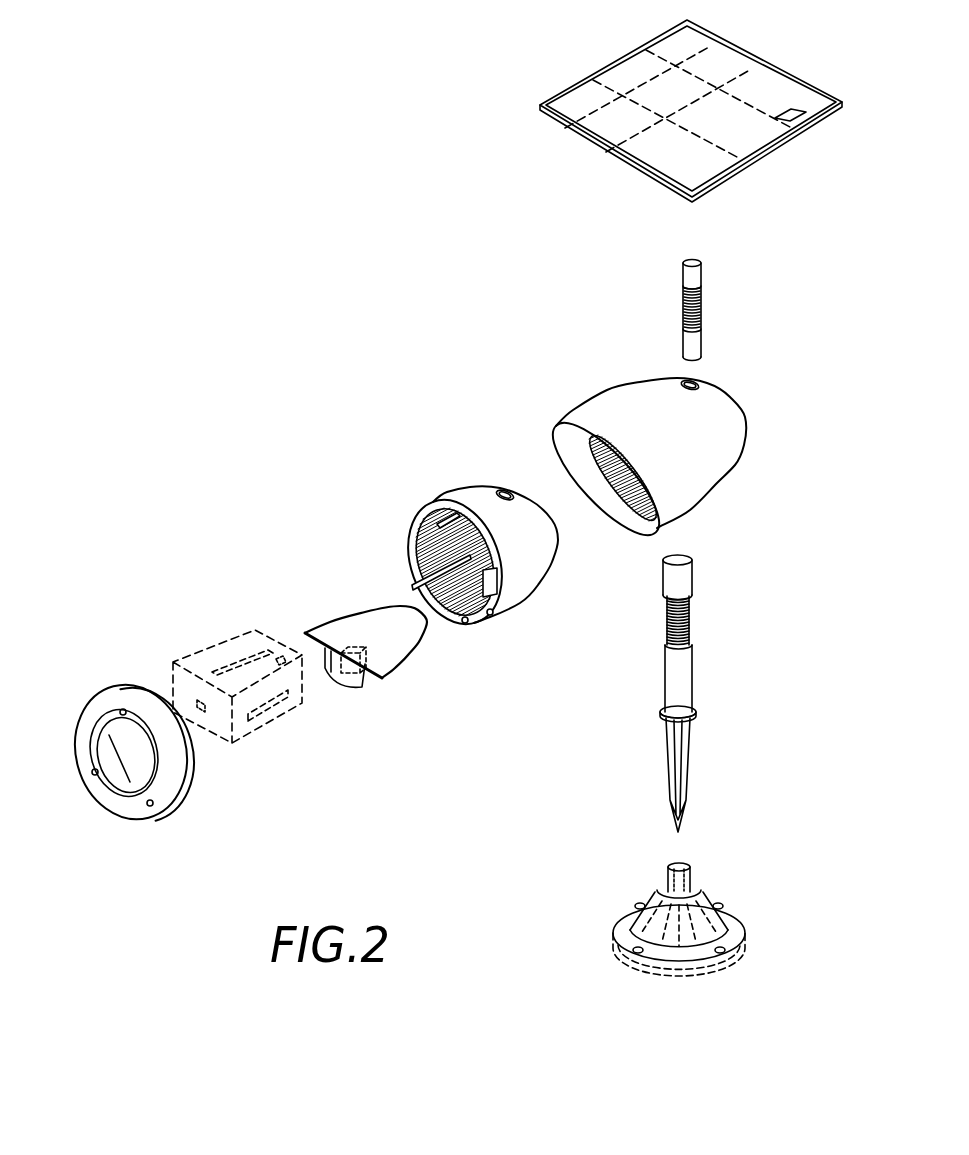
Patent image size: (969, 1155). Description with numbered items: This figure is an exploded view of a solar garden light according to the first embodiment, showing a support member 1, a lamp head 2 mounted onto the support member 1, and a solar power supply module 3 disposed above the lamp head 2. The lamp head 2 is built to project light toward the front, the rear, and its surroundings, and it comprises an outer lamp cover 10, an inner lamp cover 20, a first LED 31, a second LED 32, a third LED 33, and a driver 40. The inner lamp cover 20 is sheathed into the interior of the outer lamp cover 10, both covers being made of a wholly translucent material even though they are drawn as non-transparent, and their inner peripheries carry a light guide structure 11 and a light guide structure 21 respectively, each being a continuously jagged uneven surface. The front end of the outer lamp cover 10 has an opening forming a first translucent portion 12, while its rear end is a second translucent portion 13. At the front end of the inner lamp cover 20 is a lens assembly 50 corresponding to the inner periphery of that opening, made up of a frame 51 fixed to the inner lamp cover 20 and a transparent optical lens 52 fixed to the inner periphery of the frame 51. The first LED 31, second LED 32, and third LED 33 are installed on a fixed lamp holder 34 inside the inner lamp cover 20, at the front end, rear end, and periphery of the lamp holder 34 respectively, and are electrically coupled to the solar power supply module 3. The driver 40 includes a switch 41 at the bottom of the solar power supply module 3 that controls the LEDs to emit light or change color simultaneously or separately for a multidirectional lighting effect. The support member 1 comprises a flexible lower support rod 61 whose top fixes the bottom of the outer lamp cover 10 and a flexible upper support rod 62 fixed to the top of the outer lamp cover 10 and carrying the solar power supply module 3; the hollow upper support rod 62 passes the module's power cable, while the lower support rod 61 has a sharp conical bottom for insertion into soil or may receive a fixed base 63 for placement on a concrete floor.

The support member 1 is at (717, 693).
The lamp head 2 is at (642, 449).
The solar power supply module 3 is at (691, 111).
The outer lamp cover 10 is at (642, 474).
The light guide structure 11 is at (632, 508).
The first translucent portion 12 is at (553, 430).
The second translucent portion 13 is at (742, 393).
The inner lamp cover 20 is at (489, 583).
The light guide structure 21 is at (450, 622).
The first LED 31 is at (202, 710).
The second LED 32 is at (282, 658).
The third LED 33 is at (252, 638).
The lamp holder 34 is at (236, 679).
The driver 40 is at (347, 673).
The switch 41 is at (803, 132).
The lens assembly 50 is at (148, 752).
The frame 51 is at (118, 685).
The transparent optical lens 52 is at (123, 783).
The flexible lower support rod 61 is at (692, 622).
The flexible upper support rod 62 is at (703, 303).
The fixed base 63 is at (733, 902).